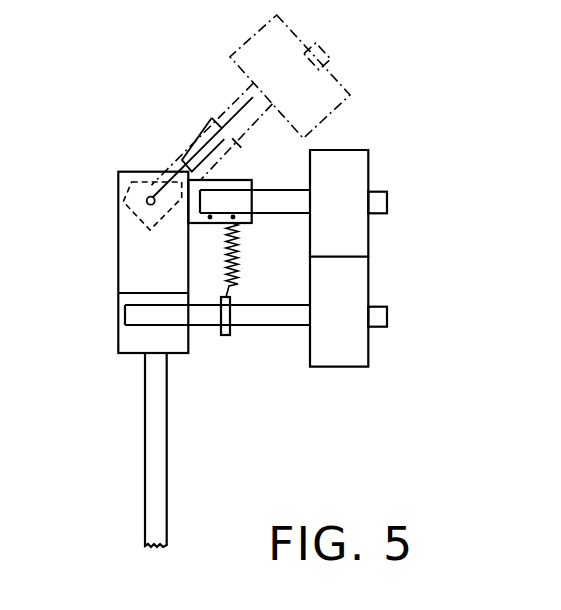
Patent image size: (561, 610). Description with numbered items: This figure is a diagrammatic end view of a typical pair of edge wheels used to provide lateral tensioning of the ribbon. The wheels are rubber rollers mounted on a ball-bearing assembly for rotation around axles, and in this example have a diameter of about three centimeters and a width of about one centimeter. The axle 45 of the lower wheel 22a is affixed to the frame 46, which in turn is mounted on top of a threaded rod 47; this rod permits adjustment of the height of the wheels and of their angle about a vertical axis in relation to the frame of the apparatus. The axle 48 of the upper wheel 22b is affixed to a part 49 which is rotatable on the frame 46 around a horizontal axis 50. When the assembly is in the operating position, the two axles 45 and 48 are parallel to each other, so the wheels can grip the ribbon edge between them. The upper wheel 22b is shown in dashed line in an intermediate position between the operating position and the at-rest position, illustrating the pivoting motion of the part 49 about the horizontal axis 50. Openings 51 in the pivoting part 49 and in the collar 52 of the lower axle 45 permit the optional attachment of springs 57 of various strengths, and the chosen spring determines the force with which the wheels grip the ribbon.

The lower wheel 22a is at (357, 280).
The upper wheel 22b is at (355, 157).
The axle 45 is at (273, 314).
The frame 46 is at (130, 243).
The threaded rod 47 is at (158, 457).
The axle 48 is at (288, 203).
The part 49 is at (233, 186).
The horizontal axis 50 is at (150, 197).
The openings 51 is at (222, 224).
The collar 52 is at (228, 335).
The springs 57 is at (233, 270).